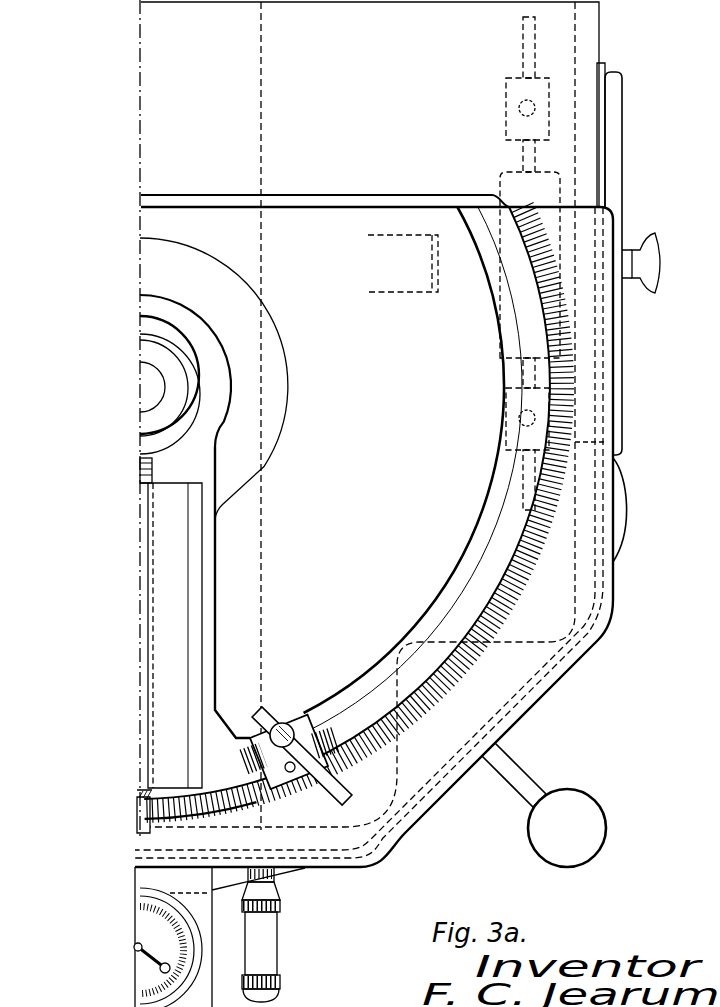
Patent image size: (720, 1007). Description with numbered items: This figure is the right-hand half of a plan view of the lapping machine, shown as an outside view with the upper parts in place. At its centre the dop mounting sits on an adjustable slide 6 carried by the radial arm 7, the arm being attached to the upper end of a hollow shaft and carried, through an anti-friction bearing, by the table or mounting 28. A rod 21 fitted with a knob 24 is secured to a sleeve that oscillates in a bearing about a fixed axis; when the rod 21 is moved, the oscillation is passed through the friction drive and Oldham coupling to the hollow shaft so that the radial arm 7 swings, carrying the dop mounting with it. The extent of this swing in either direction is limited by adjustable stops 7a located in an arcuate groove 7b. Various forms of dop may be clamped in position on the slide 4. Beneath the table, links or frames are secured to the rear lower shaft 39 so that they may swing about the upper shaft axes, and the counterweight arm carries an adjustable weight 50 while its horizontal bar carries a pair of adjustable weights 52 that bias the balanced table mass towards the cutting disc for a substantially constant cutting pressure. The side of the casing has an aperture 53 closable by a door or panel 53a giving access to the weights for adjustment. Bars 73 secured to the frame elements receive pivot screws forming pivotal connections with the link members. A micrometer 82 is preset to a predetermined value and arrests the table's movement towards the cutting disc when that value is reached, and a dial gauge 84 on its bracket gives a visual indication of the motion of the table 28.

The slide 4 is at (145, 728).
The adjustable slide 6 is at (172, 577).
The radial arm 7 is at (212, 608).
The adjustable stops 7a is at (252, 732).
The arcuate groove 7b is at (342, 703).
The rod 21 is at (507, 778).
The knob 24 is at (567, 828).
The table or mounting 28 is at (398, 533).
The rear lower shaft 39 is at (412, 292).
The adjustable weight 50 is at (500, 178).
The adjustable weights 52 is at (506, 89).
The aperture 53 is at (578, 85).
The door or panel 53a is at (616, 161).
The bars 73 is at (141, 233).
The micrometer 82 is at (268, 937).
The dial gauge 84 is at (147, 973).